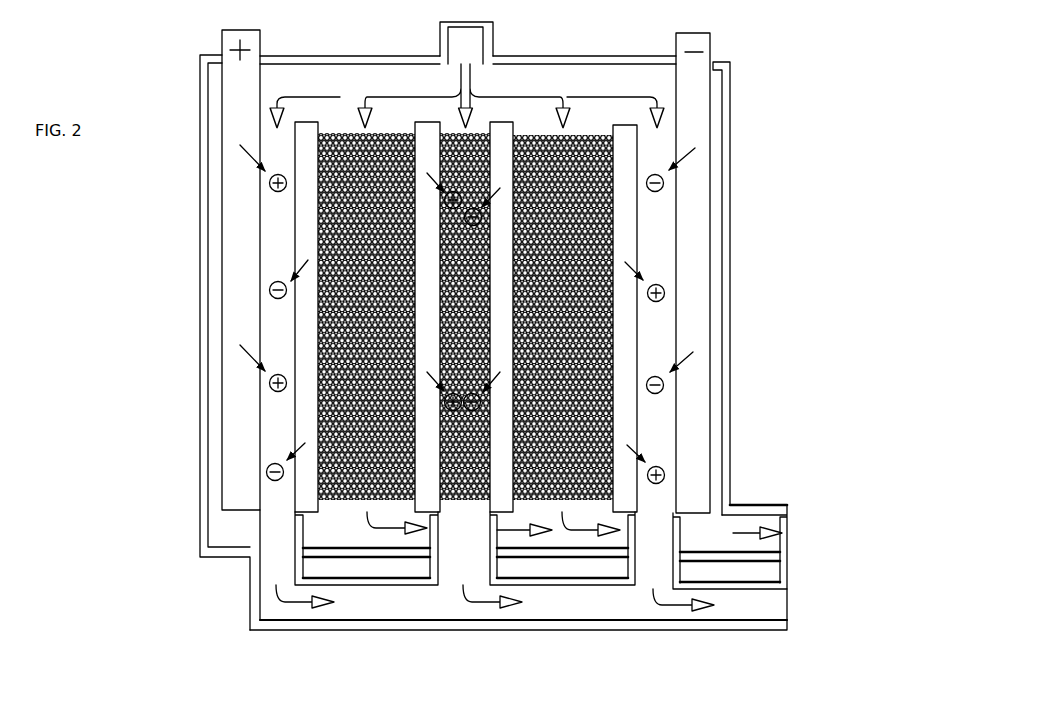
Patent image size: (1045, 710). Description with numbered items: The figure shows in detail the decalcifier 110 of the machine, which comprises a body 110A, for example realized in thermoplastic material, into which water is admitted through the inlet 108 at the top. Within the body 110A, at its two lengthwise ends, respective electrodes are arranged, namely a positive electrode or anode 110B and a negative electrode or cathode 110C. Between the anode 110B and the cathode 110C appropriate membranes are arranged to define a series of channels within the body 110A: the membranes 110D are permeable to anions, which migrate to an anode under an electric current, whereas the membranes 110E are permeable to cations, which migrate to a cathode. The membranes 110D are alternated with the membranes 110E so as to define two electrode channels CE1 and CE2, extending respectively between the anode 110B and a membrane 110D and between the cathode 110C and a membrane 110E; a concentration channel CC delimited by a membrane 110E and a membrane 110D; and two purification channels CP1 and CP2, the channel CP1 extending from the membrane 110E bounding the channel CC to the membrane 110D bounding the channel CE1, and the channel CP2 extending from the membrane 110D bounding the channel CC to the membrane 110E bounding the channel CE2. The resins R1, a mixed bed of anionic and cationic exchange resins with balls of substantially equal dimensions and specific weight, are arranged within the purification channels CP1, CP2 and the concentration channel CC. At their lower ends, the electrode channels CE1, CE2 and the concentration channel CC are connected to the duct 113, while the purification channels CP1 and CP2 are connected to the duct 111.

The inlet pipe 108 is at (489, 23).
The decalcifier 110 is at (814, 256).
The body 110A is at (200, 296).
The positive electrode or anode 110B is at (224, 41).
The negative electrode or cathode 110C is at (709, 45).
The membranes permeable to anions 110D is at (300, 423).
The membranes permeable to cations 110E is at (620, 422).
The duct 111 is at (784, 505).
The duct 113 is at (781, 632).
The concentration channel CC is at (447, 128).
The purification channel CP1 is at (342, 130).
The purification channel CP2 is at (600, 131).
The electrode channel CE1 is at (280, 238).
The electrode channel CE2 is at (652, 230).
The resins R1 is at (353, 328).